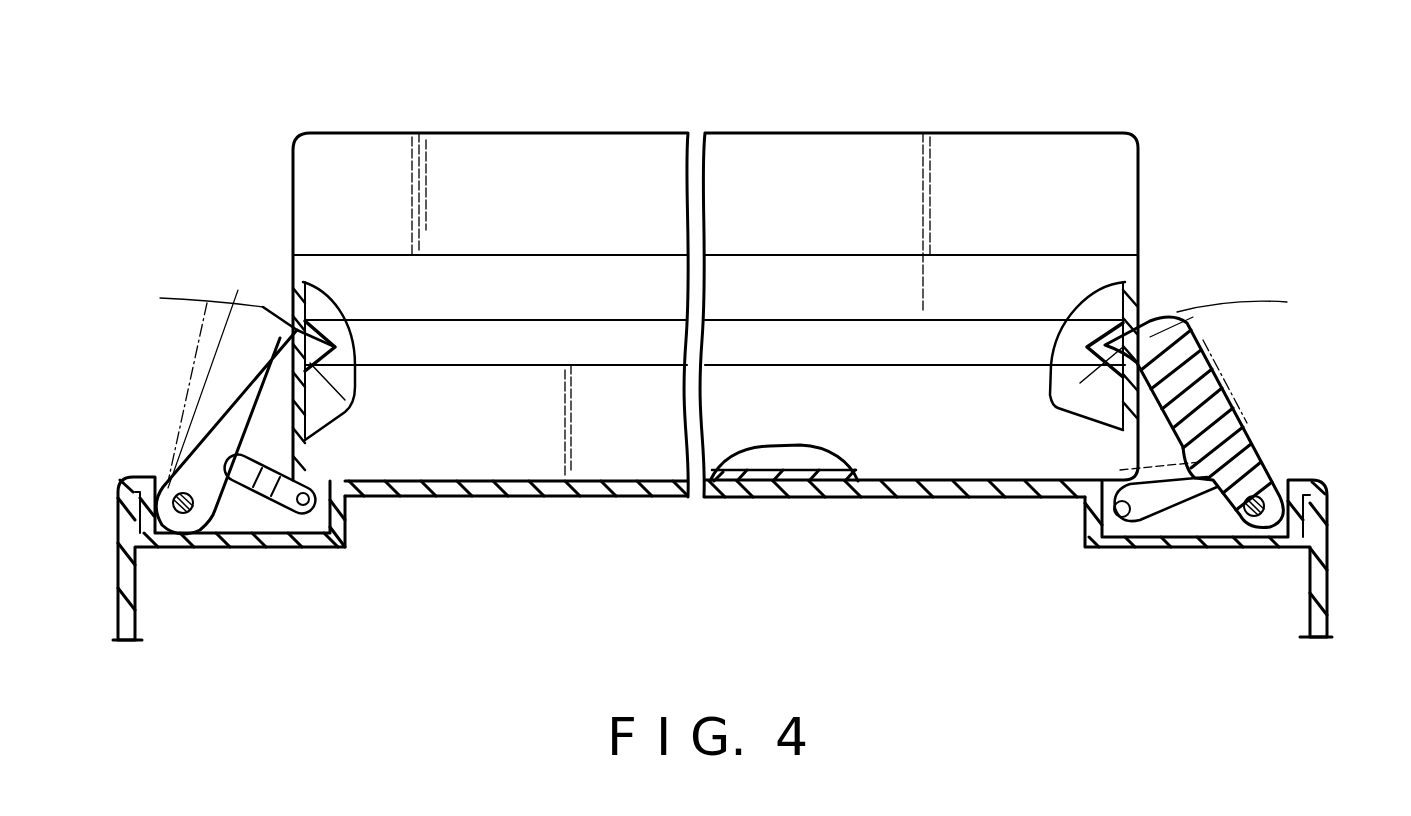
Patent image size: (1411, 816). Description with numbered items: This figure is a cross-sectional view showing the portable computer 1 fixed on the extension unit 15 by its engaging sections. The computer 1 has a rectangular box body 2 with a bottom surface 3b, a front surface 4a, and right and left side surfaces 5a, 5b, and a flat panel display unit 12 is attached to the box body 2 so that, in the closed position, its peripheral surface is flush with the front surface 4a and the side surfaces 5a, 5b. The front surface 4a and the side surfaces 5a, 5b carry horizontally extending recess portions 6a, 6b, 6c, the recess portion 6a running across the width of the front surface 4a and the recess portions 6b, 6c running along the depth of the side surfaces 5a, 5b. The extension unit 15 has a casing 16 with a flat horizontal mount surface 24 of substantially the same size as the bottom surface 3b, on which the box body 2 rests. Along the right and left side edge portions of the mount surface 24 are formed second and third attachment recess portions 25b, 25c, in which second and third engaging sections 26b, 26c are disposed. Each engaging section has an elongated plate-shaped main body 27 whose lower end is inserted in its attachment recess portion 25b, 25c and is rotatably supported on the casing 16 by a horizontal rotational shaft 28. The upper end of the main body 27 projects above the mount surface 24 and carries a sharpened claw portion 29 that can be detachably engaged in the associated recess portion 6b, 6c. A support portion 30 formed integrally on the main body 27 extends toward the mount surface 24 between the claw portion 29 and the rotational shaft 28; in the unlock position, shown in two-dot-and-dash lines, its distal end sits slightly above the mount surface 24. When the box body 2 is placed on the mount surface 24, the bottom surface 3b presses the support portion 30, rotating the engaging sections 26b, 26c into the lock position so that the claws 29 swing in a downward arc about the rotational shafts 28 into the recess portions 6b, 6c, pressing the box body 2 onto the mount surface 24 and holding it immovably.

The portable computer 1 is at (262, 240).
The box body 2 is at (600, 462).
The bottom surface 3b is at (785, 472).
The front surface 4a is at (490, 462).
The right side surface 5a is at (295, 322).
The left side surface 5b is at (1150, 310).
The recess portion 6a is at (855, 355).
The recess portion 6b is at (318, 345).
The recess portion 6c is at (1115, 330).
The display unit 12 is at (795, 150).
The extension unit 15 is at (1340, 492).
The casing 16 is at (1330, 600).
The mount surface 24 is at (892, 470).
The second attachment recess portion 25b is at (262, 533).
The third attachment recess portion 25c is at (1148, 537).
The second engaging section 26b is at (190, 412).
The third engaging section 26c is at (1245, 390).
The main body 27 is at (183, 453).
The rotational shaft 28 is at (196, 534).
The claw portion 29 is at (255, 343).
The support portion 30 is at (318, 522).